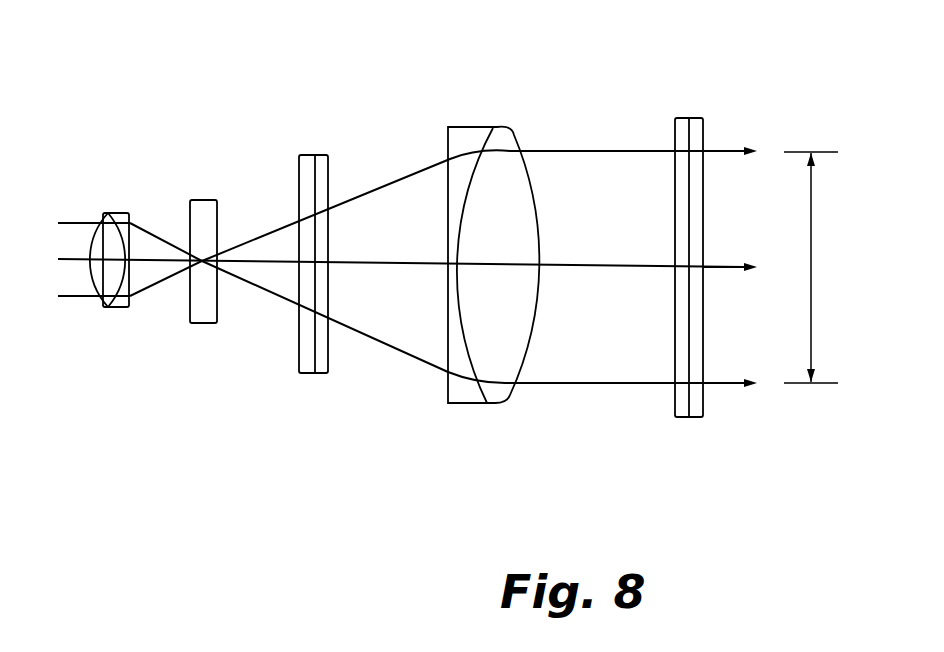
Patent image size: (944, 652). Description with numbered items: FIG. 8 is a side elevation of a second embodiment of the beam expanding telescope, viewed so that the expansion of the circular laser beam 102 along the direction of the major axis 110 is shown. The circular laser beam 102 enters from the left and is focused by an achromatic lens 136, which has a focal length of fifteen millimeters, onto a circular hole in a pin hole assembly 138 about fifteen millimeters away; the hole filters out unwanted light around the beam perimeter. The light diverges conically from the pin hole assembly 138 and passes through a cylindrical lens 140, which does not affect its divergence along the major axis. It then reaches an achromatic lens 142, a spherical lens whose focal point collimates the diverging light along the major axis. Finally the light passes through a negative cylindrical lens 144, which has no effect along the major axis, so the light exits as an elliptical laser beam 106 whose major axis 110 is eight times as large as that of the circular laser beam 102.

The circular laser beam 102 is at (84, 305).
The achromatic lens 136 is at (117, 205).
The pin hole assembly 138 is at (202, 190).
The cylindrical lens 140 is at (315, 140).
The achromatic lens 142 is at (488, 120).
The negative cylindrical lens 144 is at (698, 113).
The elliptical laser beam 106 is at (722, 390).
The major axis 110 is at (820, 270).